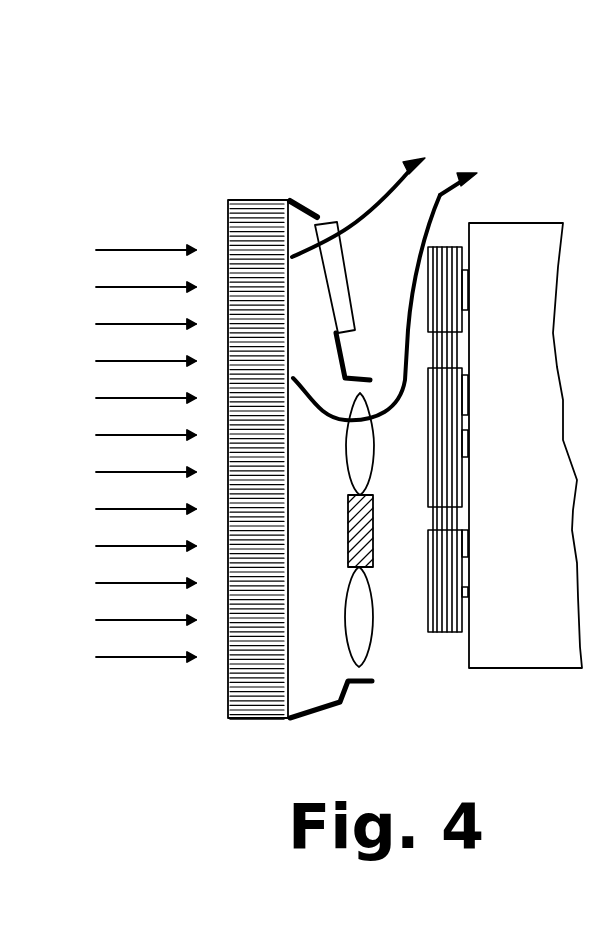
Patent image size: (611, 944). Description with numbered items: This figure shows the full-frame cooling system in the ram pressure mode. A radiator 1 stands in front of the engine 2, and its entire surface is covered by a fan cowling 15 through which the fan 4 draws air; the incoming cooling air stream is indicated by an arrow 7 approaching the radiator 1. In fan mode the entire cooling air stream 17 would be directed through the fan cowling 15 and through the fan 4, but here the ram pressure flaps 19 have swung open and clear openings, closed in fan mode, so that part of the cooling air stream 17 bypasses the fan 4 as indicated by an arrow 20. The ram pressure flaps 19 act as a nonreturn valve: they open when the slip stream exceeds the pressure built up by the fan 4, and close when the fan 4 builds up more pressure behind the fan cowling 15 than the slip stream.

The radiator 1 is at (232, 200).
The engine 2 is at (527, 308).
The fan 4 is at (360, 618).
The cooling air stream 7 is at (150, 685).
The fan cowling 15 is at (312, 208).
The cooling air stream 17 is at (440, 195).
The ram pressure flaps 19 is at (350, 300).
The arrow 20 is at (350, 257).